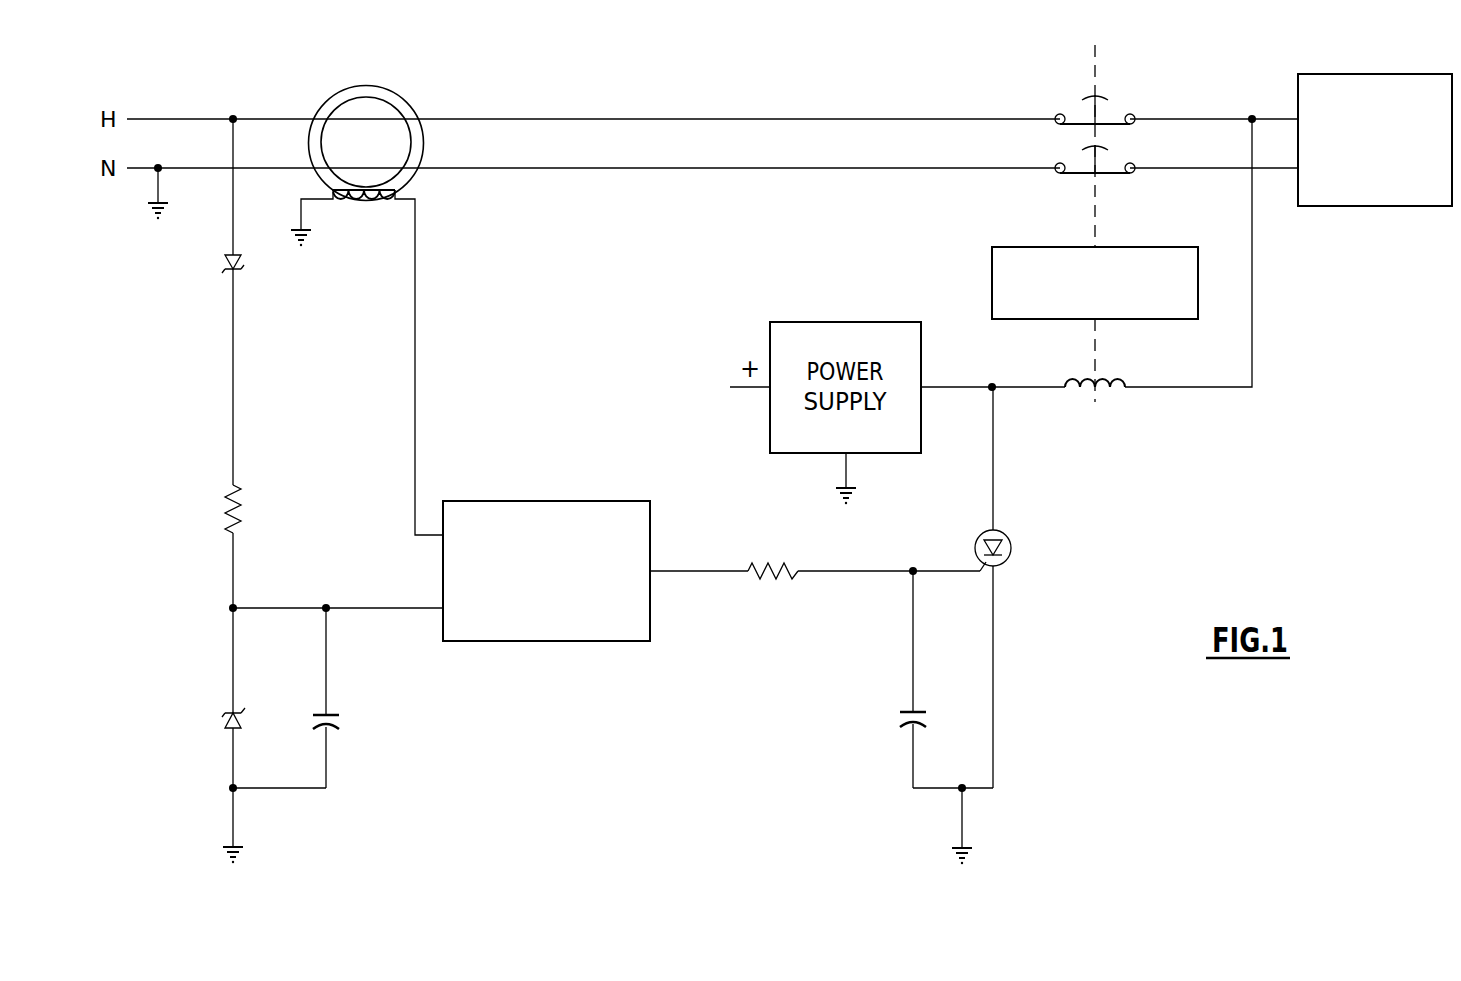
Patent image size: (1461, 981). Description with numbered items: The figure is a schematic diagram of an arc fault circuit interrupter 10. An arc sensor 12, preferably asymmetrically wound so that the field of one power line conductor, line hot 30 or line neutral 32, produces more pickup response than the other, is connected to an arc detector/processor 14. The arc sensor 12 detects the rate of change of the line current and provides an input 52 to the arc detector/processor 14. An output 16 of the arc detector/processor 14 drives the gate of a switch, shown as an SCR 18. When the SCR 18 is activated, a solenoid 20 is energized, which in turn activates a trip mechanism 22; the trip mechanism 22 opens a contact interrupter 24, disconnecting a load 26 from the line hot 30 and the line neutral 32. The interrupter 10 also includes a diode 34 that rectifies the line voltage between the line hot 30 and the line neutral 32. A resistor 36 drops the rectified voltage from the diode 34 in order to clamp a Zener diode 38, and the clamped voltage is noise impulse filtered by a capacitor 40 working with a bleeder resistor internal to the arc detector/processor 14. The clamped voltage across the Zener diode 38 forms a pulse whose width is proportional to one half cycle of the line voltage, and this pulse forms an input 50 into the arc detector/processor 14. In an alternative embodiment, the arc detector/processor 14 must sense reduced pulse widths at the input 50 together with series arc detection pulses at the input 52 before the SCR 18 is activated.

The arc fault circuit interrupter 10 is at (671, 78).
The arc sensor 12 is at (316, 103).
The arc detector/processor 14 is at (511, 501).
The output 16 is at (671, 571).
The SCR 18 is at (1010, 553).
The solenoid 20 is at (1117, 393).
The trip mechanism 22 is at (992, 290).
The contact interrupter 24 is at (1121, 106).
The load 26 is at (1347, 74).
The line hot 30 is at (918, 119).
The line neutral 32 is at (908, 168).
The diode 34 is at (224, 266).
The resistor 36 is at (246, 520).
The Zener diode 38 is at (224, 723).
The capacitor 40 is at (341, 719).
The input 50 is at (431, 612).
The input 52 is at (414, 530).